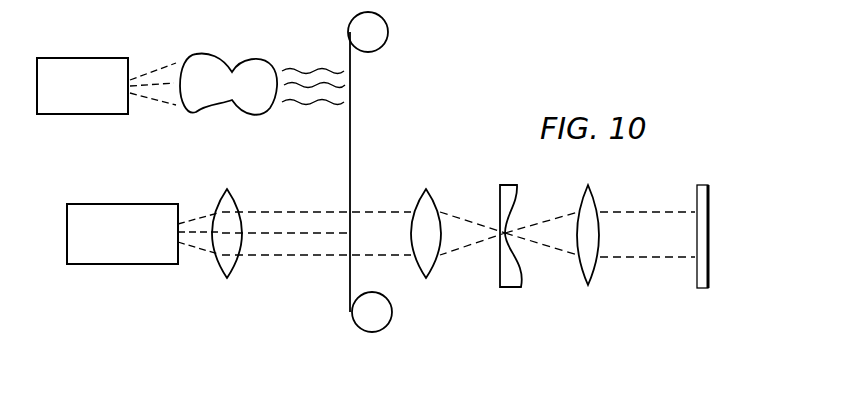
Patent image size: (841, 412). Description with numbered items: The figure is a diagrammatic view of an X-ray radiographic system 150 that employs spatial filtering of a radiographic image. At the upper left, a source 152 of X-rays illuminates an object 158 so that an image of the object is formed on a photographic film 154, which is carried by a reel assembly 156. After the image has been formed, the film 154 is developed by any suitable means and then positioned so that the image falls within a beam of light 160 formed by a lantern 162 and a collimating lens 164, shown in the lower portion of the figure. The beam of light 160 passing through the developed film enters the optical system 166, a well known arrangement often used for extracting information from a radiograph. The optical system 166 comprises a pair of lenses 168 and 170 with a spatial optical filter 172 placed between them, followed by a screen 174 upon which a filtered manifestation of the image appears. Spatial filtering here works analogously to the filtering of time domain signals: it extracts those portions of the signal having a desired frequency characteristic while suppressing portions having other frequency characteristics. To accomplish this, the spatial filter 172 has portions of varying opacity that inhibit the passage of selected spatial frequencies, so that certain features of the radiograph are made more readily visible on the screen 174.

The X-ray radiographic system 150 is at (430, 140).
The source 152 is at (88, 64).
The photographic film 154 is at (350, 172).
The reel assembly 156 is at (386, 28).
The object 158 is at (210, 62).
The beam of light 160 is at (263, 255).
The lantern 162 is at (148, 210).
The collimating lens 164 is at (232, 206).
The optical system 166 is at (491, 288).
The lens 168 is at (432, 208).
The lens 170 is at (592, 206).
The spatial optical filter 172 is at (518, 197).
The screen 174 is at (703, 247).